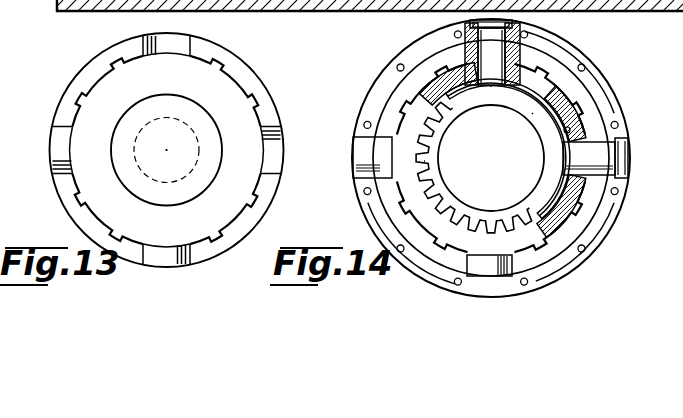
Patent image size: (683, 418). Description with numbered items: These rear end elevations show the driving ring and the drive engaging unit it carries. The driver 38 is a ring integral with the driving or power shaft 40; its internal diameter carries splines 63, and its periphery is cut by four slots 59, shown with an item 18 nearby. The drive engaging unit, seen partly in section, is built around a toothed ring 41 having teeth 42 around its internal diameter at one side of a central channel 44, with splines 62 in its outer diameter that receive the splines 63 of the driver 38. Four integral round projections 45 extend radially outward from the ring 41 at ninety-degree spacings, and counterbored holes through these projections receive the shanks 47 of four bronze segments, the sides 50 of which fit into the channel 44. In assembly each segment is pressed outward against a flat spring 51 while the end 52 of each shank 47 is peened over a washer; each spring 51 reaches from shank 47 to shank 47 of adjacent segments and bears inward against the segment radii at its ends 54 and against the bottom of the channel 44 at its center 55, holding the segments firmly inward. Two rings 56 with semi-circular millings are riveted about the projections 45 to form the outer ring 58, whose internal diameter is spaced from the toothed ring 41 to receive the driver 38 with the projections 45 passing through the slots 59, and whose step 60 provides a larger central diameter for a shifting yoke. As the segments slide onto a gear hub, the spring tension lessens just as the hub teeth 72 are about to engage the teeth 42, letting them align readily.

In FIG. 13, the housing wall 18 is at (72, 13).
In FIG. 13, the driver 38 is at (151, 150).
In FIG. 14, the driver 38 is at (491, 153).
In FIG. 13, the driving or power shaft 40 is at (180, 150).
In FIG. 13, the slots 59 is at (143, 144).
In FIG. 13, the splines 63 is at (166, 150).
In FIG. 14, the splines 63 is at (454, 158).
In FIG. 14, the ring 58 is at (356, 40).
In FIG. 14, the ring 41 is at (475, 194).
In FIG. 14, the teeth 42 is at (549, 176).
In FIG. 14, the channel 44 is at (591, 102).
In FIG. 14, the round projections 45 is at (482, 146).
In FIG. 14, the shanks 47 is at (595, 158).
In FIG. 14, the sides 50 is at (491, 158).
In FIG. 14, the flat springs 51 is at (508, 139).
In FIG. 14, the end 52 is at (522, 51).
In FIG. 14, the ends 54 is at (515, 138).
In FIG. 14, the center 55 is at (518, 138).
In FIG. 14, the rings 56 is at (517, 158).
In FIG. 14, the step 60 is at (575, 248).
In FIG. 14, the splines 62 is at (407, 81).
In FIG. 14, the teeth 72 is at (409, 169).